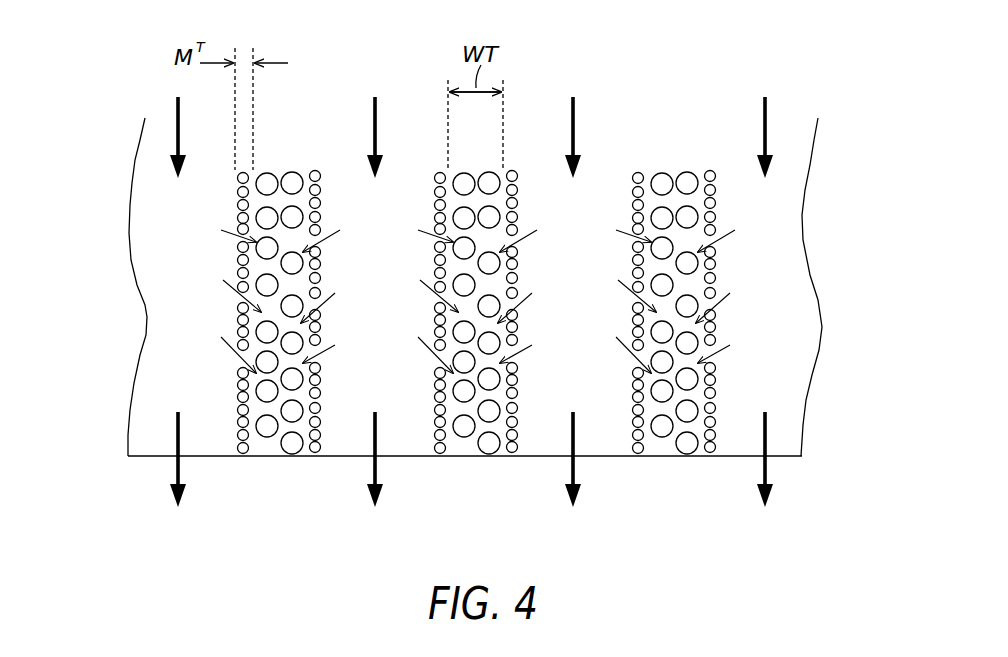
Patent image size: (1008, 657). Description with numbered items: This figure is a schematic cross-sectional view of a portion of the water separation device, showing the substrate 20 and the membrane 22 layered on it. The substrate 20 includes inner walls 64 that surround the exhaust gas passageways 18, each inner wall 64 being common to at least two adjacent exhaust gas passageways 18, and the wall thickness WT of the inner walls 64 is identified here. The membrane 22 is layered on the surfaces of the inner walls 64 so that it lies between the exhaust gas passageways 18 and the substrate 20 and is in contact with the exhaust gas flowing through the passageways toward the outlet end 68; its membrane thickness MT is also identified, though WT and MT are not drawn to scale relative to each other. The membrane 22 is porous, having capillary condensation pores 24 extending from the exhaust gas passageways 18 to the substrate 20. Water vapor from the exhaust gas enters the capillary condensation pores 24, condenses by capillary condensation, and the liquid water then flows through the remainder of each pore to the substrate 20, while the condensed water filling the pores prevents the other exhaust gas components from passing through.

The exhaust gas passageways 18 is at (163, 145).
The substrate 20 is at (292, 172).
The membrane 22 is at (312, 457).
The capillary condensation pores 24 is at (239, 273).
The inner walls 64 is at (415, 236).
The outlet end 68 is at (342, 457).